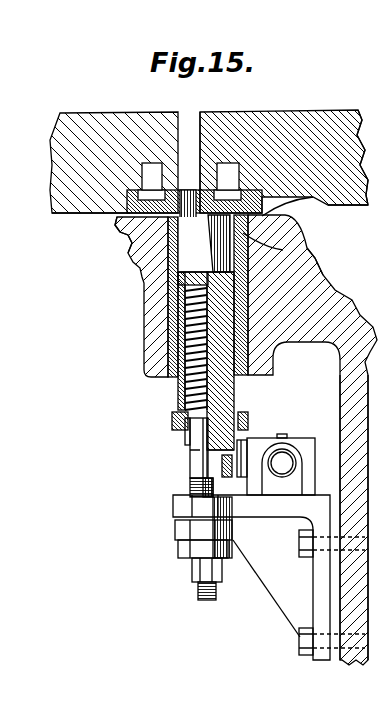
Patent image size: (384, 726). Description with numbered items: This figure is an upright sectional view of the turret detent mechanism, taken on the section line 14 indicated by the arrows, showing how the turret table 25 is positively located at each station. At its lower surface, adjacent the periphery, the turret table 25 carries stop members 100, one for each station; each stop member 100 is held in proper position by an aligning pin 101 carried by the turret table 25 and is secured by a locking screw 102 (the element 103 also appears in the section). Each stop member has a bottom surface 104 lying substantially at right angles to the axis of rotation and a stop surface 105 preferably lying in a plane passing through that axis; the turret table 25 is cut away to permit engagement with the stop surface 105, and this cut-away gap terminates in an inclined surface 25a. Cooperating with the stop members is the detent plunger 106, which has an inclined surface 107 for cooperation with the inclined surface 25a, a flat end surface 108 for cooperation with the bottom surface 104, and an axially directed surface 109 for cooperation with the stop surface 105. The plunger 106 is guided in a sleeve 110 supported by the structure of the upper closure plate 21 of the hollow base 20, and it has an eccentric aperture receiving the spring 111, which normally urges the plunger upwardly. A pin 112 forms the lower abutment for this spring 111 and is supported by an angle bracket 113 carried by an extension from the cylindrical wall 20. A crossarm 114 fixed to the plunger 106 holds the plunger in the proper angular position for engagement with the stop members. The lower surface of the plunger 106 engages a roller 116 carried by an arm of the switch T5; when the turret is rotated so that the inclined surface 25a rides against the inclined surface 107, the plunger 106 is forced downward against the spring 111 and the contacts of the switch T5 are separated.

The aligning pins 101 is at (140, 172).
The locking screws 102 is at (178, 128).
The clamping plate 103 is at (130, 196).
The stop members 100 is at (125, 216).
The inclined surface 25a is at (322, 197).
The turret table 25 is at (352, 196).
The upper closure plate 21 is at (152, 342).
The detent plunger 106 is at (180, 278).
The flat end surface 108 is at (200, 226).
The axially directed surface 109 is at (137, 236).
The sleeve 110 is at (185, 362).
The spring 111 is at (190, 384).
The crossarm 114 is at (172, 423).
The pin 112 is at (200, 463).
The roller 116 is at (228, 478).
The switch T5 is at (302, 445).
The angle bracket 113 is at (280, 583).
The bottom surface 104 is at (283, 250).
The stop surface 105 is at (270, 220).
The inclined surface 107 is at (314, 260).
The hollow base or pedestal 20 is at (343, 385).
The section line 14 is at (237, 81).